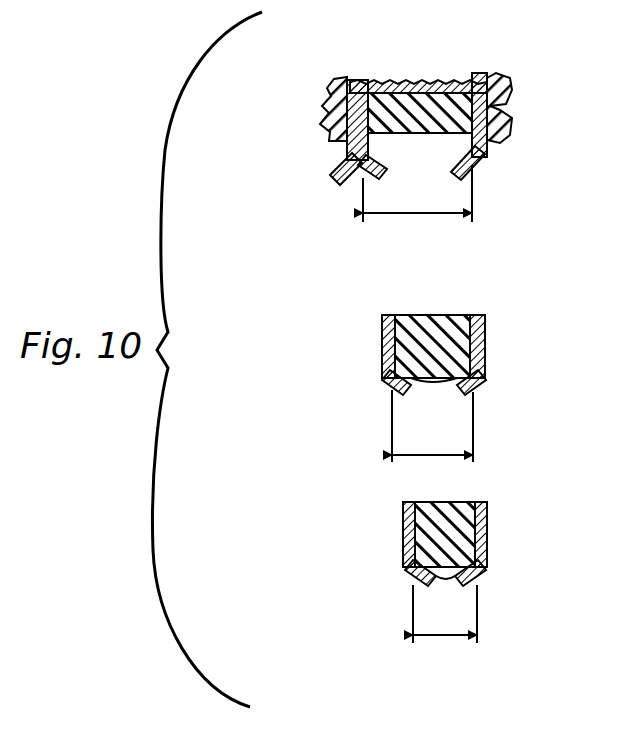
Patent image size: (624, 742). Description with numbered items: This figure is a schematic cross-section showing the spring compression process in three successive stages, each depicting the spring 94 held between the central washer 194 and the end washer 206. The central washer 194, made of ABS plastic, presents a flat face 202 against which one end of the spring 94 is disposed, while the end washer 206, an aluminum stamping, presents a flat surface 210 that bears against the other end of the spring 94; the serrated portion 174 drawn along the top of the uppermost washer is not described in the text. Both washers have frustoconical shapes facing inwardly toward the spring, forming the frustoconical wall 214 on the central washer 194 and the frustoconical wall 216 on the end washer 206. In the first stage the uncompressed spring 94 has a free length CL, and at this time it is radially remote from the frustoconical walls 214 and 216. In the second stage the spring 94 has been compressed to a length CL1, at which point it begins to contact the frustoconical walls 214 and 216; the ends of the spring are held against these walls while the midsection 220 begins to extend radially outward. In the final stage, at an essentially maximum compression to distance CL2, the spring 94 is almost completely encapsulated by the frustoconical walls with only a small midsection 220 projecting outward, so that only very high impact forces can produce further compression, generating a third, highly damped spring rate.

The spring 94 is at (415, 134).
The flat face 202 is at (363, 78).
The serrated top portion 174 is at (447, 83).
The flat surface 210 is at (493, 124).
The end washer 206 is at (500, 165).
The frustoconical wall 216 is at (482, 165).
The frustoconical wall 214 is at (362, 178).
The central washer 194 is at (340, 190).
The midsection 220 is at (420, 385).
The free length CL is at (415, 215).
The compression length CL1 is at (436, 456).
The compression distance CL2 is at (438, 637).